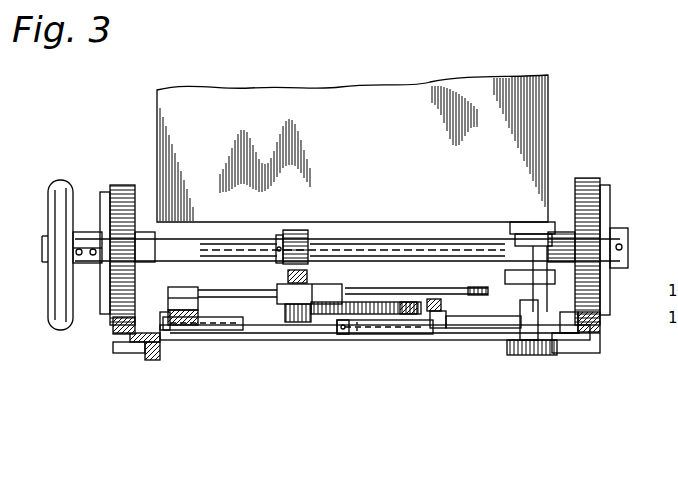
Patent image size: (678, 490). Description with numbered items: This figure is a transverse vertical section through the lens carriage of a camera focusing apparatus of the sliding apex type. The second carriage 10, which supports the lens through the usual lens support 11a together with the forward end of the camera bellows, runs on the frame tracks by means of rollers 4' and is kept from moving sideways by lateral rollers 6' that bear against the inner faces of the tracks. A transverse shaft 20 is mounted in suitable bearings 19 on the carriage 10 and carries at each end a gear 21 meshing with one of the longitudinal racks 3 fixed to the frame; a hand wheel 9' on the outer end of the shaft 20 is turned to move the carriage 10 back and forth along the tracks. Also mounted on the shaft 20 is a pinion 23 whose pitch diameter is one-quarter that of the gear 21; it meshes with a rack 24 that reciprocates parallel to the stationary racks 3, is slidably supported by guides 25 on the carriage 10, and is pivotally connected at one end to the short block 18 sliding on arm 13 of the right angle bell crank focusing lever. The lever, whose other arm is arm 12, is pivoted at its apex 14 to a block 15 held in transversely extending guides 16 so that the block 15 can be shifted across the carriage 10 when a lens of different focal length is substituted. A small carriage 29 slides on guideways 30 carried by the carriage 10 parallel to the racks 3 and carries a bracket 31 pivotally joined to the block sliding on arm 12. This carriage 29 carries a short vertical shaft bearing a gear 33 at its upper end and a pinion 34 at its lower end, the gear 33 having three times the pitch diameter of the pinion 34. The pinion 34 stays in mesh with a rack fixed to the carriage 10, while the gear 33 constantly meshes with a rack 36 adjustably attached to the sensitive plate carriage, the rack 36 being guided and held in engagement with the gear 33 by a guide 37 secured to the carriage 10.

The longitudinal rack 3 is at (112, 328).
The roller 4' is at (136, 371).
The lateral roller 6' is at (546, 349).
The hand wheel 9' is at (72, 236).
The second carriage 10 is at (296, 337).
The lens support 11a is at (521, 149).
The arm of bell crank lever 12 is at (367, 302).
The arm of bell crank lever 13 is at (245, 292).
The apex pivot 14 is at (200, 291).
The block 15 is at (203, 333).
The transversely extending guides 16 is at (240, 331).
The short block 18 is at (300, 296).
The bearing 19 is at (498, 224).
The transverse shaft 20 is at (411, 234).
The gear 21 is at (117, 186).
The pinion 23 is at (306, 230).
The rack 24 is at (325, 242).
The guide 25 is at (307, 276).
The carriage 29 is at (343, 336).
The guideway 30 is at (410, 340).
The bracket 31 is at (312, 322).
The gear 33 is at (407, 302).
The pinion 34 is at (357, 336).
The rack 36 is at (433, 299).
The guide 37 is at (437, 328).